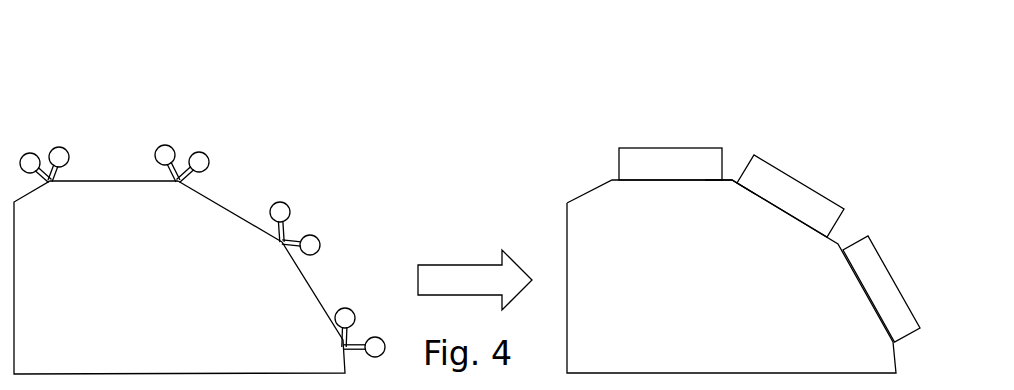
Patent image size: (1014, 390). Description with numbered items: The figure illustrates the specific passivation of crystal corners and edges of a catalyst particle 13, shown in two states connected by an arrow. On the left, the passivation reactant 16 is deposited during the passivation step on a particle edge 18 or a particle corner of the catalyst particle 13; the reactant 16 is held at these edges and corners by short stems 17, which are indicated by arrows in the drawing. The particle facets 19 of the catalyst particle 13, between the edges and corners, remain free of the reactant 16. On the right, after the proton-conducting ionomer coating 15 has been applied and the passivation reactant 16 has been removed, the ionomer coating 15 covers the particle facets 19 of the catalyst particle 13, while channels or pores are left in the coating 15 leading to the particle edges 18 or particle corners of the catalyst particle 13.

The catalyst particle 13 is at (163, 319).
The proton-conducting ionomer coating 15 is at (675, 160).
The passivation reactant 16 is at (168, 150).
The pin / stem 17 is at (191, 136).
The particle edge 18 is at (732, 180).
The particle facet 19 is at (228, 211).